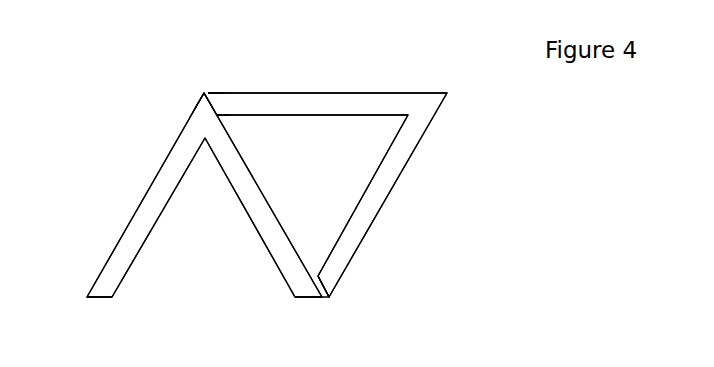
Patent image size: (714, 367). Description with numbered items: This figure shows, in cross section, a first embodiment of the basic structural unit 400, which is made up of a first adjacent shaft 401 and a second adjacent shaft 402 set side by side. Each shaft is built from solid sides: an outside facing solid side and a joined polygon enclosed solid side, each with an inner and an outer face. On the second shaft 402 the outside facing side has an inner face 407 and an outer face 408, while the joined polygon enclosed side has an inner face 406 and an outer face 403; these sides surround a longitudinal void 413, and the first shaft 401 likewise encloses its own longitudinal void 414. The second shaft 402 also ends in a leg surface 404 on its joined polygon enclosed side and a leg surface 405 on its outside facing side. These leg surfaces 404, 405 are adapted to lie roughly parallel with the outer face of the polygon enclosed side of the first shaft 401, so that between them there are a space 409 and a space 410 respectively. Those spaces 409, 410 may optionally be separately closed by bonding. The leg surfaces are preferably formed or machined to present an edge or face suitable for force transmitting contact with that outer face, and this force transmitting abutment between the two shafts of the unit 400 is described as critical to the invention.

The basic structural unit 400 is at (530, 185).
The first adjacent shaft 401 is at (160, 142).
The second adjacent shaft 402 is at (387, 75).
The outer face of a joined polygon enclosed solid side 403 is at (393, 193).
The leg surface of a joined polygon enclosed solid side 404 is at (322, 280).
The leg surface of an outside facing solid side 405 is at (219, 101).
The inner face of a joined polygon enclosed solid side 406 is at (371, 170).
The inner face of an outside facing solid side 407 is at (303, 117).
The outer face of an outside facing solid side 408 is at (303, 92).
The space 409 is at (327, 302).
The space 410 is at (204, 89).
The longitudinal void 413 is at (322, 220).
The longitudinal void 414 is at (185, 218).